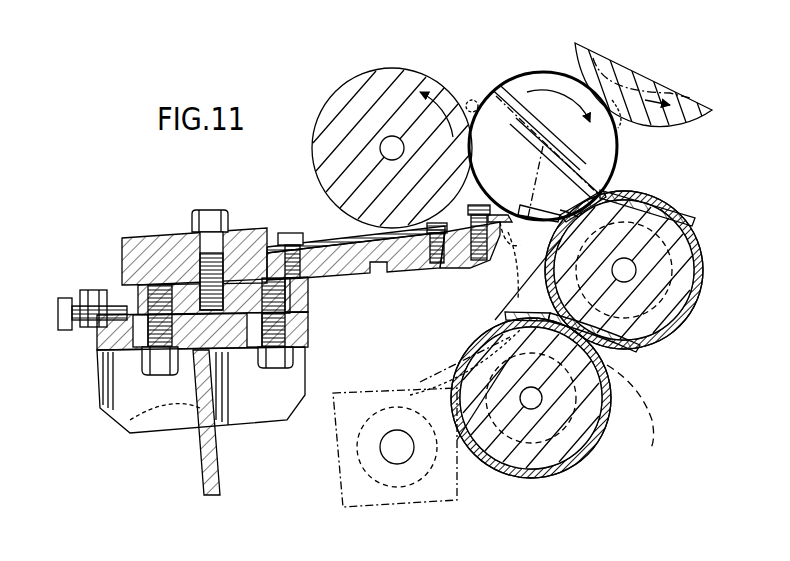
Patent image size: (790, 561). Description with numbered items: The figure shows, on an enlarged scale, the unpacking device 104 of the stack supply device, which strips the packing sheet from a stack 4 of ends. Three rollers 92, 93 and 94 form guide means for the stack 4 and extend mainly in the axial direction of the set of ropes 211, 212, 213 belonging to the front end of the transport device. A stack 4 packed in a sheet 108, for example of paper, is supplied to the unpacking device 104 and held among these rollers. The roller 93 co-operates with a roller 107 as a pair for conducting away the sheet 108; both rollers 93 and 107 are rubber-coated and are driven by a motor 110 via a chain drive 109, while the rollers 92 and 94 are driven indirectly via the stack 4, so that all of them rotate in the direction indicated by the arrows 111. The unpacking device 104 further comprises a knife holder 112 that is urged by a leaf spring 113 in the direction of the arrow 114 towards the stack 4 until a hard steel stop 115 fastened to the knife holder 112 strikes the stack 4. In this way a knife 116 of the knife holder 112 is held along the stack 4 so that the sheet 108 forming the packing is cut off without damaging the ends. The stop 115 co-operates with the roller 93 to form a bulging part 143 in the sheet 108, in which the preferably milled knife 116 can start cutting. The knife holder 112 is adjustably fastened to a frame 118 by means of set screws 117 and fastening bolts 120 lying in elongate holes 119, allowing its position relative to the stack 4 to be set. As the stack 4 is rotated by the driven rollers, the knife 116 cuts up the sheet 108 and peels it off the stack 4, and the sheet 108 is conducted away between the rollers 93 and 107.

The stack 4 is at (551, 70).
The roller 92 is at (342, 118).
The roller 93 is at (690, 212).
The roller 94 is at (660, 90).
The unpacking device 104 is at (272, 186).
The roller 107 is at (606, 420).
The sheet 108 is at (622, 394).
The chain drive 109 is at (440, 360).
The motor 110 is at (337, 478).
The arrows 111 is at (455, 140).
The knife holder 112 is at (460, 262).
The leaf spring 113 is at (338, 240).
The arrow 114 is at (510, 172).
The hard steel stop 115 is at (508, 205).
The knife 116 is at (525, 240).
The set screws 117 is at (73, 296).
The frame 118 is at (200, 458).
The elongate holes 119 is at (108, 402).
The fastening bolts 120 is at (230, 383).
The bulging part 143 is at (540, 216).
The rope 211 is at (477, 100).
The rope 212 is at (618, 122).
The rope 213 is at (535, 262).